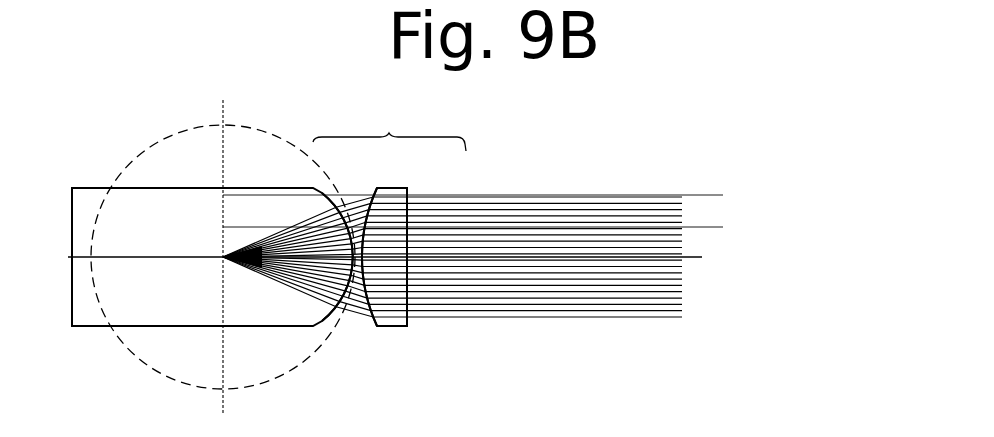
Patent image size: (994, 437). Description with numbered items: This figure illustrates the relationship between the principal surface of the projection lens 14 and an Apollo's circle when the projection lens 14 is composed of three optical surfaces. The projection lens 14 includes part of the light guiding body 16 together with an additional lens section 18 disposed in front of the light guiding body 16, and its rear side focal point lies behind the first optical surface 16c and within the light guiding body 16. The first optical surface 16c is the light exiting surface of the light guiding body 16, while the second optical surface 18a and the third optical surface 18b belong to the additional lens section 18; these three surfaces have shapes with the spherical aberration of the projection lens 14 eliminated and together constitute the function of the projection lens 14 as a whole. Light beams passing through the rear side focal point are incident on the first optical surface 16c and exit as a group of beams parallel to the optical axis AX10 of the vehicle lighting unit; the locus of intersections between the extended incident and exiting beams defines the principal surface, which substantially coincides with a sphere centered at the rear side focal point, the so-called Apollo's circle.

The projection lens 14 is at (389, 131).
The light guiding body 16 is at (248, 188).
The first optical surface 16c is at (326, 190).
The additional lens section 18 is at (396, 188).
The second optical surface 18a is at (374, 181).
The third optical surface 18b is at (409, 190).
The optical axis AX10 is at (692, 258).